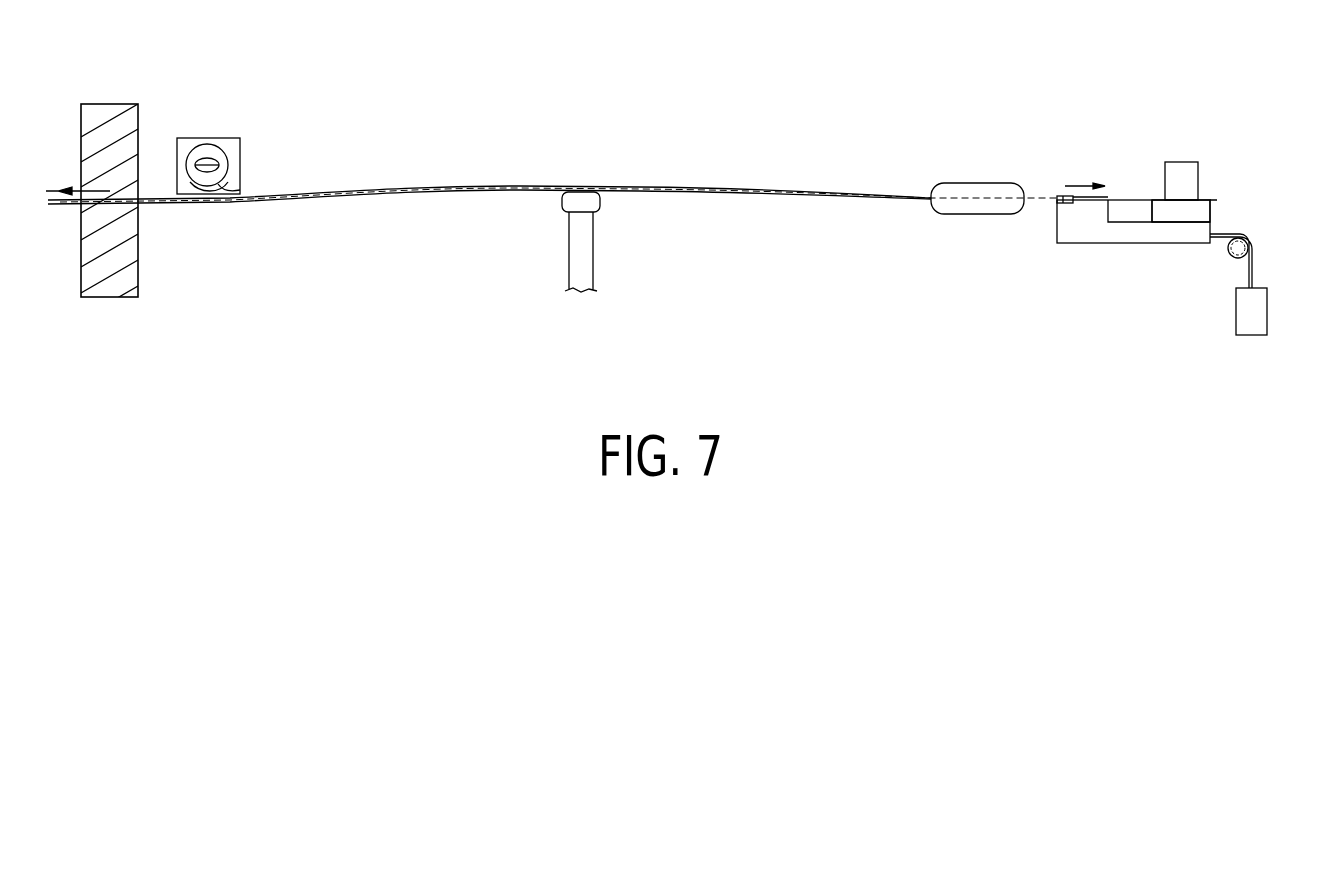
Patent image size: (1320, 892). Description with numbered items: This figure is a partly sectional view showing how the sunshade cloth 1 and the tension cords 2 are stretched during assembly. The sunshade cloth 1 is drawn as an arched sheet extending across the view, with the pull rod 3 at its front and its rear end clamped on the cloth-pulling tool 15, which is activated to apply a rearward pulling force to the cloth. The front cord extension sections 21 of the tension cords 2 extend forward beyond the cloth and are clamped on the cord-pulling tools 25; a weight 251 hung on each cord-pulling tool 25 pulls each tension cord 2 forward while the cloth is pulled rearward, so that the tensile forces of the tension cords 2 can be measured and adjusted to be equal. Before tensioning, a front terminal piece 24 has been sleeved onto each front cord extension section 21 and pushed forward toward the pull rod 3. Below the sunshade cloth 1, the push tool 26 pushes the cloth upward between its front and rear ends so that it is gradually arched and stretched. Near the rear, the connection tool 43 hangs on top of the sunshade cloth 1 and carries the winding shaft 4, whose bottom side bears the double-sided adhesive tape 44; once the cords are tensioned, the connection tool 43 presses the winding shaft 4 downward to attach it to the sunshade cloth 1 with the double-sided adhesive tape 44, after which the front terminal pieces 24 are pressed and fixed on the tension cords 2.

The sunshade cloth 1 is at (622, 185).
The tension cord 2 is at (1133, 199).
The pull rod 3 is at (977, 188).
The winding shaft 4 is at (213, 150).
The cloth-pulling tool 15 is at (108, 124).
The front cord extension section 21 is at (1180, 198).
The front terminal piece 24 is at (1067, 203).
The cord-pulling tool 25 is at (1183, 159).
The push tool 26 is at (592, 200).
The connection tool 43 is at (188, 142).
The double-sided adhesive tape 44 is at (228, 190).
The weight 251 is at (1260, 313).